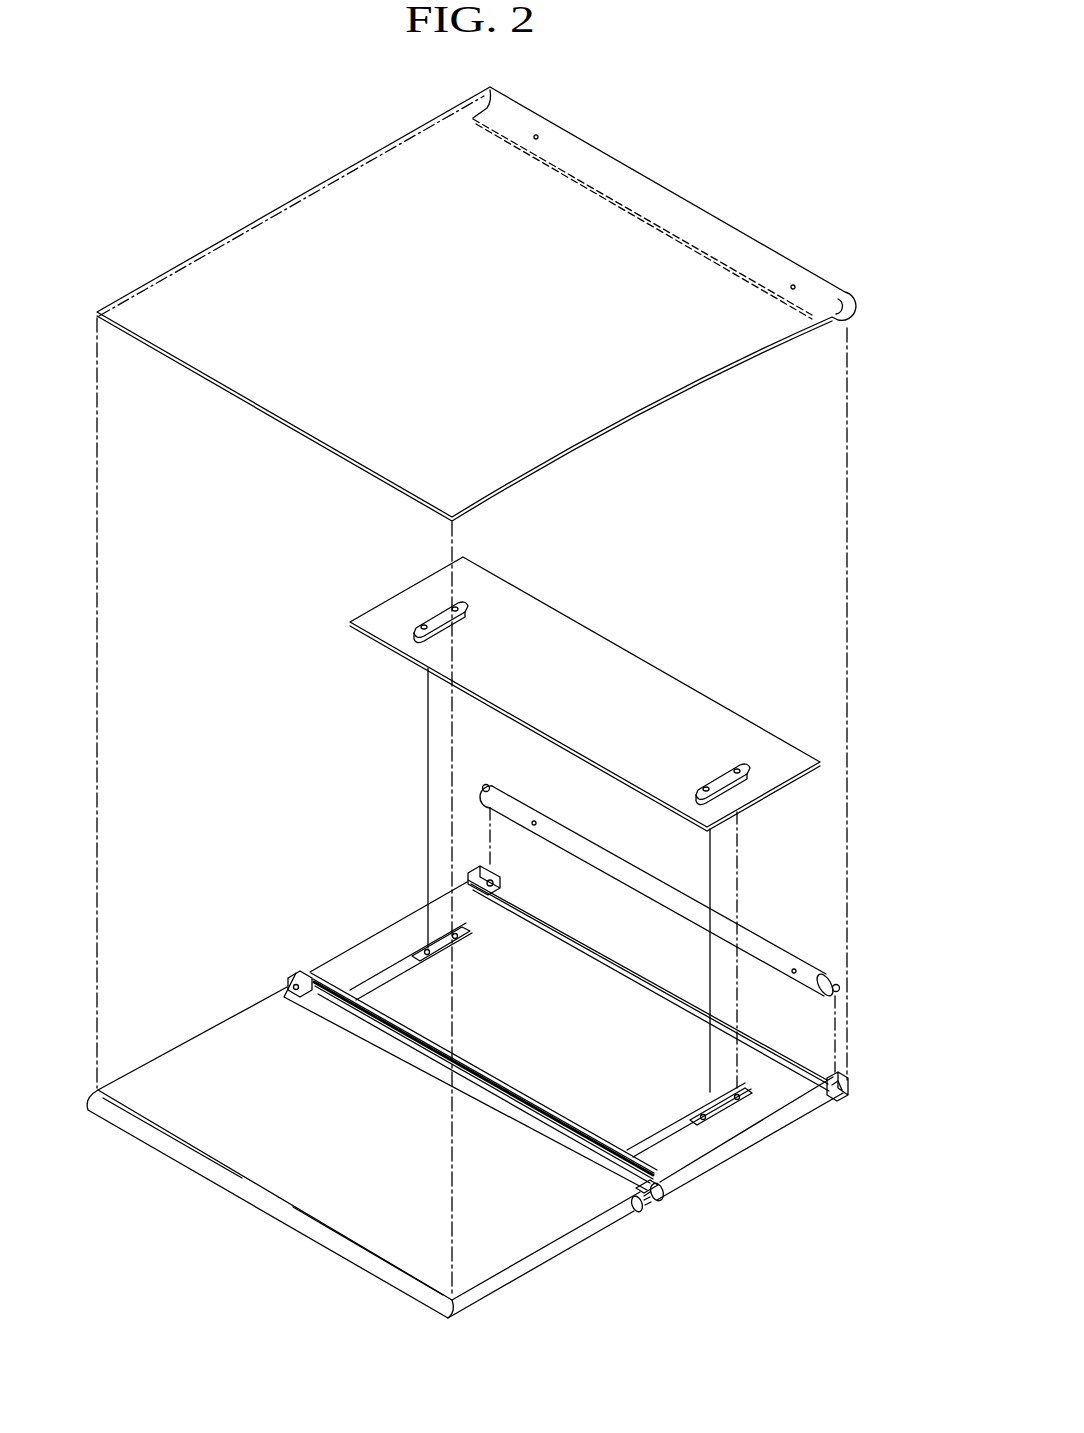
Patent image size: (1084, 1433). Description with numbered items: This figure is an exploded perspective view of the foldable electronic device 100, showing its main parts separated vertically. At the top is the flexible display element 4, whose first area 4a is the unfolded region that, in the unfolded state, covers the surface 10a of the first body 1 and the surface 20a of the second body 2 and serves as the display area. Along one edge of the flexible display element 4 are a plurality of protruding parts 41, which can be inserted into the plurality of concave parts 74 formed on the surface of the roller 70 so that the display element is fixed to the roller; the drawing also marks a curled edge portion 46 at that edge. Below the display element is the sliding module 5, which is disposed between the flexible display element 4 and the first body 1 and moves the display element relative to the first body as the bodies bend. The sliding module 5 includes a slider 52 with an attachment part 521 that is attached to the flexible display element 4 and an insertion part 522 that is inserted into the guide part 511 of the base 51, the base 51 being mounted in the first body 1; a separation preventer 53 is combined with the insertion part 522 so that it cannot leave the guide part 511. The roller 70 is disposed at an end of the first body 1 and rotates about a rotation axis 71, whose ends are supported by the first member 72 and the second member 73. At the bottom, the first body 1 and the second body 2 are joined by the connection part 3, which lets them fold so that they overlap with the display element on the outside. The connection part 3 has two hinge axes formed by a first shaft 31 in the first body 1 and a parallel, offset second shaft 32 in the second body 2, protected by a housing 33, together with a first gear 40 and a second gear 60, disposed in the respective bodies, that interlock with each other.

The foldable electronic device 100 is at (768, 105).
The flexible display element 4 is at (205, 232).
The first area 4a is at (318, 210).
The protruding parts 41 is at (536, 135).
The curled edge portion 46 is at (853, 299).
The slider 52 is at (546, 684).
The attachment part 521 is at (621, 658).
The insertion part 522 is at (413, 620).
The concave parts 74 is at (534, 821).
The sliding module 5 is at (372, 946).
The separation preventer 53 is at (438, 938).
The guide part 511 is at (367, 985).
The first member 72 is at (498, 882).
The roller 70 is at (690, 909).
The rotation axis 71 is at (840, 988).
The second member 73 is at (849, 1085).
The housing 33 is at (307, 993).
The base 51 is at (796, 1093).
The first body 1 is at (556, 1017).
The surface of the first body 10a is at (680, 1130).
The first shaft 31 is at (667, 1193).
The first gear 40 is at (652, 1204).
The second shaft 32 is at (636, 1214).
The second gear 60 is at (646, 1212).
The connection part 3 is at (676, 1251).
The surface of the second body 20a is at (388, 1200).
The second body 2 is at (363, 1169).